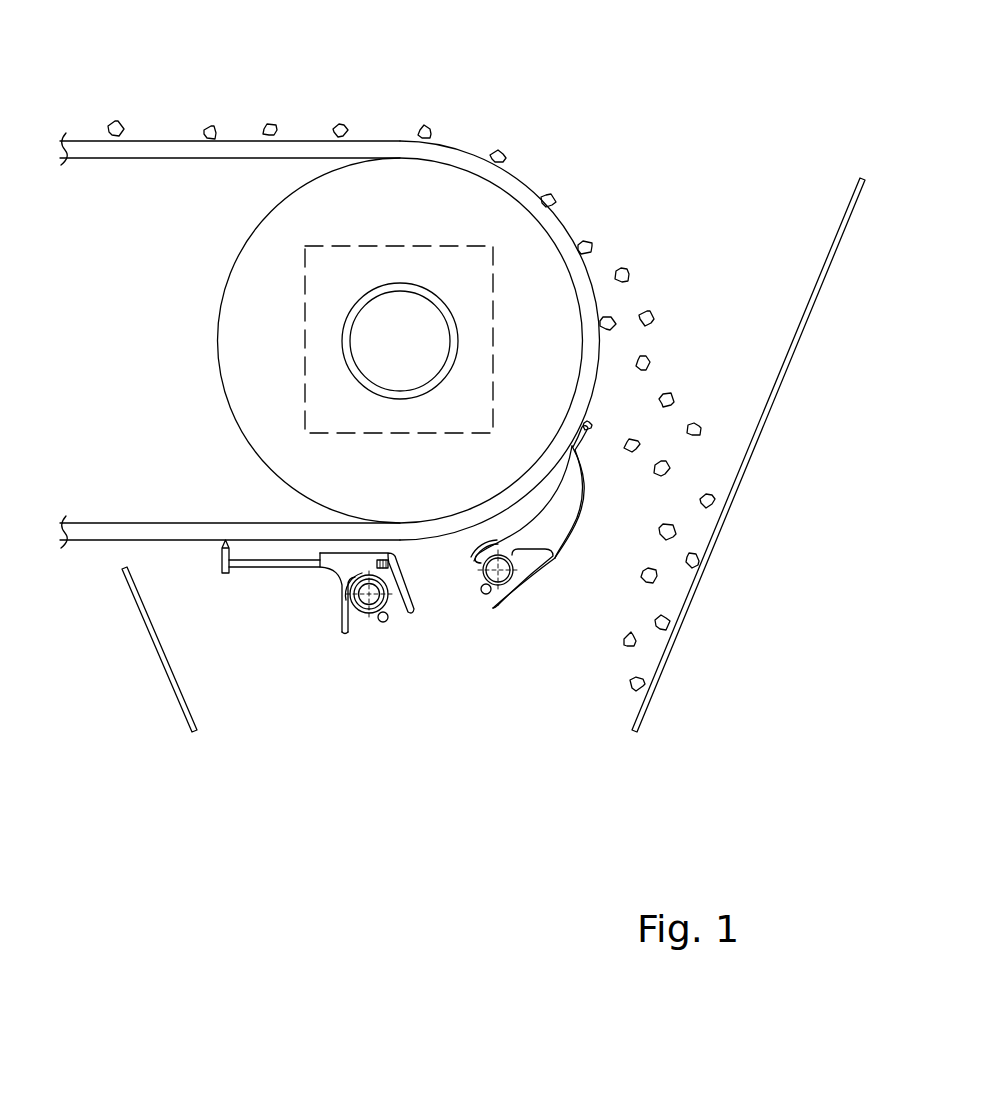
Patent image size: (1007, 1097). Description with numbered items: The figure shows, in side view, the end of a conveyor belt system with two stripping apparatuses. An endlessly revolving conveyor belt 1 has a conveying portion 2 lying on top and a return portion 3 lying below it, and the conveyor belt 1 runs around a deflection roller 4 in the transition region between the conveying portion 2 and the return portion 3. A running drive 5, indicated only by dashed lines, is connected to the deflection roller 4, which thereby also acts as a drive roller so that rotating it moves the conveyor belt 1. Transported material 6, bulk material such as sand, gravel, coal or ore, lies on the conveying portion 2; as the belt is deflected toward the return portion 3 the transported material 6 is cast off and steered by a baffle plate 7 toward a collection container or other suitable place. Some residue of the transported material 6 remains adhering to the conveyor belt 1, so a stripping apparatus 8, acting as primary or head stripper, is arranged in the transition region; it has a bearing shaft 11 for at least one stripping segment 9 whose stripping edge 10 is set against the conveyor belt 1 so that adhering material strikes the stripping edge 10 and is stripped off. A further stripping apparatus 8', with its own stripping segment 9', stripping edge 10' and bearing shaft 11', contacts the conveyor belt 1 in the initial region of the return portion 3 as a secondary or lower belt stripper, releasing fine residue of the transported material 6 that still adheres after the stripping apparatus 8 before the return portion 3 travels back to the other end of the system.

The conveyor belt 1 is at (80, 100).
The conveying portion 2 is at (187, 150).
The return portion 3 is at (86, 542).
The deflection roller 4 is at (445, 198).
The running drive 5 is at (495, 268).
The transported material 6 is at (327, 127).
The baffle plate 7 is at (769, 415).
The stripping apparatus 8 is at (527, 619).
The stripping segment 9 is at (580, 621).
The stripping edge 10 is at (689, 493).
The bearing shaft 11 is at (482, 671).
The further stripping apparatus 8' is at (344, 673).
The stripping segment 9' is at (278, 676).
The stripping edge 10' is at (207, 666).
The bearing shaft 11' is at (367, 682).